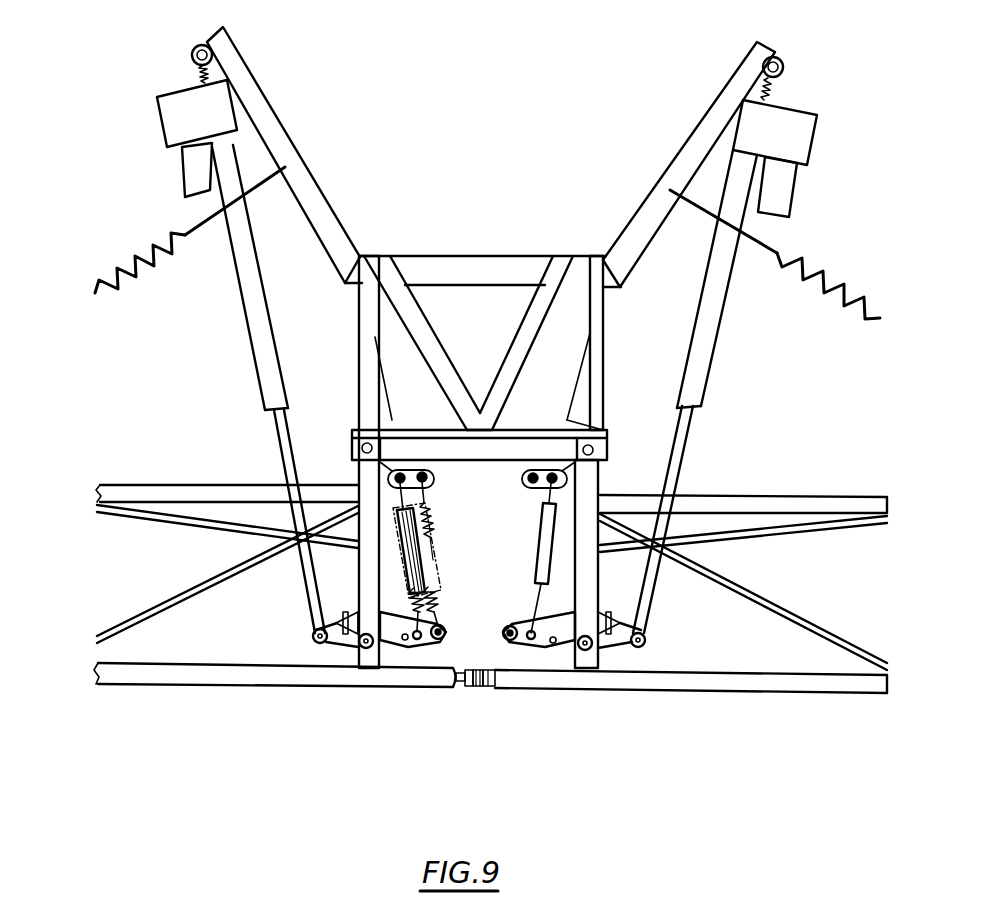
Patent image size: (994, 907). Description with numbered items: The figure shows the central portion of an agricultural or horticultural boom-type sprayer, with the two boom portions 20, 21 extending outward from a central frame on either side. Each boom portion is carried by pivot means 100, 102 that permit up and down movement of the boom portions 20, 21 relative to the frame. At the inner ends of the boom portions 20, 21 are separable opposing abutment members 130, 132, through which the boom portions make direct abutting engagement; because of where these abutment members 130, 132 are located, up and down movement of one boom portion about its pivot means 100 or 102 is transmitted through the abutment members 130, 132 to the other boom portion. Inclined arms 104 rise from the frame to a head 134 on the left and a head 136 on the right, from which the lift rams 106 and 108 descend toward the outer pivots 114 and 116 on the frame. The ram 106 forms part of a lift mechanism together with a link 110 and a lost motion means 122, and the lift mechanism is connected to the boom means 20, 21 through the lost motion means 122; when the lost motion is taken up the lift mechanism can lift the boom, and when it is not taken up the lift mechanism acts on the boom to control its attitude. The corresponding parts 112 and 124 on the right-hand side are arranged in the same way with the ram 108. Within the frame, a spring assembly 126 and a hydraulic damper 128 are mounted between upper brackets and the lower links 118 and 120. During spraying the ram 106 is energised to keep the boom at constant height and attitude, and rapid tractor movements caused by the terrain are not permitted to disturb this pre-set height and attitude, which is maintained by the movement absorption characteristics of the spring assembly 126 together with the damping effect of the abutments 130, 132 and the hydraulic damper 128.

The boom portion 20 is at (123, 478).
The boom portion 21 is at (741, 485).
The pivot means 100 is at (350, 437).
The pivot means 102 is at (604, 450).
The lift arm 104 is at (258, 97).
The ram 106 is at (242, 272).
The right hydraulic cylinder 108 is at (710, 345).
The lift mechanism member 110 is at (405, 641).
The right pivot pin 112 is at (553, 644).
The left post pivot 114 is at (362, 648).
The right post pivot 116 is at (590, 653).
The left lower link 118 is at (357, 571).
The right lower link 120 is at (600, 583).
The lost motion means 122 is at (323, 617).
The right stop bracket 124 is at (644, 625).
The spring assembly 126 is at (439, 550).
The hydraulic damper 128 is at (530, 540).
The abutment member 130 is at (461, 694).
The abutment member 132 is at (486, 695).
The left drive head with spring 134 is at (130, 262).
The right drive head with spring 136 is at (813, 263).